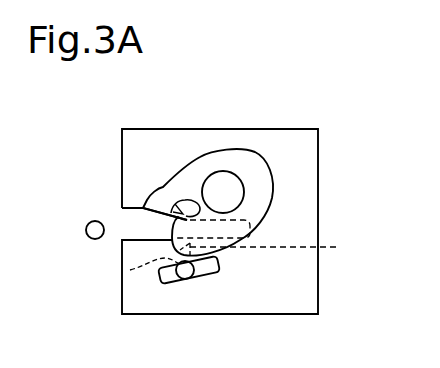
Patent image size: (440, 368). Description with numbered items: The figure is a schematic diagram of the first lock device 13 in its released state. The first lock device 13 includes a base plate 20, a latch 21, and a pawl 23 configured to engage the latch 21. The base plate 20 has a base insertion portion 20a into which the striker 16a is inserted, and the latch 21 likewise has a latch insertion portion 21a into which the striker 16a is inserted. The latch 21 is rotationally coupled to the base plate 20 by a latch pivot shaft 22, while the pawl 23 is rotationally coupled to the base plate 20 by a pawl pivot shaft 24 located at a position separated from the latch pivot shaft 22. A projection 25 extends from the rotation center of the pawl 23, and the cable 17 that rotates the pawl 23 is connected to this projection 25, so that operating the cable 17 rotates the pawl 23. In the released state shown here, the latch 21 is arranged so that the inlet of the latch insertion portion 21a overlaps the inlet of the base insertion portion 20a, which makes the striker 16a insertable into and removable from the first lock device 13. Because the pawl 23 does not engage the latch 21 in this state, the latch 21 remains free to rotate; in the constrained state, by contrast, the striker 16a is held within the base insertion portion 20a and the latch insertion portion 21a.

The first lock device 13 is at (353, 97).
The base plate 20 is at (318, 166).
The base insertion portion 20a is at (127, 212).
The latch 21 is at (269, 162).
The latch insertion portion 21a is at (180, 203).
The latch pivot shaft 22 is at (223, 171).
The cable 17 is at (330, 246).
The striker 16a is at (86, 230).
The projection 25 is at (130, 270).
The pawl 23 is at (172, 280).
The pawl pivot shaft 24 is at (187, 280).